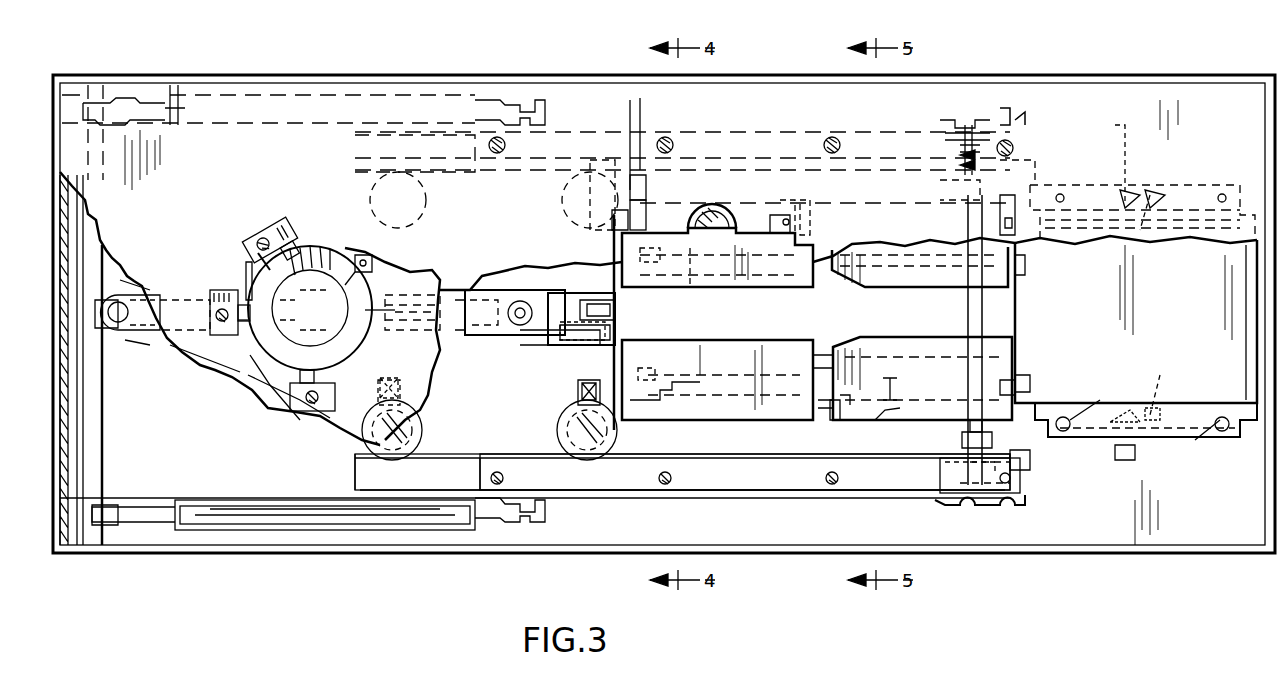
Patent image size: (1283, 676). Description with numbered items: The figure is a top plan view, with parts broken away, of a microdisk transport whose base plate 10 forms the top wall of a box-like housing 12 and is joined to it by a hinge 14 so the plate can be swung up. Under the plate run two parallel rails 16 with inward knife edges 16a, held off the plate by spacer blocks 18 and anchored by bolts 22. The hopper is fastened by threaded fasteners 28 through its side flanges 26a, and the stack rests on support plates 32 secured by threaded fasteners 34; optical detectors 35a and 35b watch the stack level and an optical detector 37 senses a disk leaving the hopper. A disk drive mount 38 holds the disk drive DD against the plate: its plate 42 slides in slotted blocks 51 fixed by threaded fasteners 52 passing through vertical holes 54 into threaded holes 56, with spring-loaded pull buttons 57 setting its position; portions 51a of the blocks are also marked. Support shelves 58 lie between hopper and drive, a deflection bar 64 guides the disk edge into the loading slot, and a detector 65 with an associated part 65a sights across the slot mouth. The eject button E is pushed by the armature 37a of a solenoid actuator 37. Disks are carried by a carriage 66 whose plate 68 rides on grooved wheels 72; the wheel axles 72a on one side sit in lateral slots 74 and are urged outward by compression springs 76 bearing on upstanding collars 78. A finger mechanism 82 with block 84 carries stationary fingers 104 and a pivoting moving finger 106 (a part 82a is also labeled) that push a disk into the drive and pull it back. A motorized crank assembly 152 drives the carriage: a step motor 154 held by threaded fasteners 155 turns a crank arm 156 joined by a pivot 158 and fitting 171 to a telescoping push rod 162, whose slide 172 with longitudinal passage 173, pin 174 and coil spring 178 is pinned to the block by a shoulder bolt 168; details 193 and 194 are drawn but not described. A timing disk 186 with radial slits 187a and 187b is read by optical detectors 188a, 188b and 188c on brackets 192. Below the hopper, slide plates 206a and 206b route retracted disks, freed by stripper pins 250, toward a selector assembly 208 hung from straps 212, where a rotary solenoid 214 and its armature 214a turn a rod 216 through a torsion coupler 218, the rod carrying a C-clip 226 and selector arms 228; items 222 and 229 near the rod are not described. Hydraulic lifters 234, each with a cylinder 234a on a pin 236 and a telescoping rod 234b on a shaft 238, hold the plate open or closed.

The base plate 10 is at (130, 102).
The housing 12 is at (385, 553).
The hinge 14 is at (75, 455).
The rails 16 is at (335, 483).
The knife edges 16a is at (935, 172).
The spacer blocks 18 is at (890, 135).
The bolts 22 is at (665, 137).
The hopper side flanges 26a is at (772, 218).
The threaded fasteners 28 is at (800, 210).
The support plates 32 is at (748, 320).
The threaded fasteners 34 is at (720, 224).
The optical detector 35a is at (640, 200).
The optical detector 35b is at (615, 212).
The solenoid actuator 37 is at (812, 210).
The armature 37a is at (1018, 378).
The disk drive mount 38 is at (1124, 445).
The plate 42 is at (1253, 210).
The slotted blocks 51 is at (1108, 180).
The plate portion 51a is at (1125, 180).
The threaded fasteners 52 is at (1060, 194).
The vertical holes 54 is at (1095, 410).
The threaded holes 56 is at (1218, 194).
The spring-loaded pull buttons 57 is at (1160, 185).
The support shelves 58 is at (910, 337).
The deflection bar 64 is at (1030, 270).
The detector 65 is at (1018, 232).
The coupling arm 65a is at (1020, 190).
The carriage 66 is at (352, 455).
The carriage plate 68 is at (535, 440).
The grooved wheels 72 is at (420, 198).
The wheel axles 72a is at (420, 420).
The lateral slots 74 is at (630, 400).
The spring 76 is at (405, 395).
The upstanding collars 78 is at (410, 380).
The finger mechanism 82 is at (552, 280).
The clamp jaw 82a is at (556, 345).
The block 84 is at (576, 338).
The stationary fingers 104 is at (617, 305).
The moving finger 106 is at (580, 262).
The motorized crank assembly 152 is at (263, 185).
The step motor 154 is at (345, 248).
The threaded fasteners 155 is at (375, 262).
The crank arm 156 is at (148, 340).
The pivot 158 is at (142, 360).
The push rod 162 is at (420, 288).
The shoulder bolt 168 is at (525, 326).
The fitting 171 is at (148, 290).
The slide 172 is at (540, 268).
The longitudinal passage 173 is at (430, 300).
The pin 174 is at (460, 330).
The coil spring 178 is at (388, 322).
The timing disk 186 is at (250, 250).
The radial slit 187a is at (215, 378).
The radial slit 187b is at (262, 400).
The optical detector 188a is at (248, 275).
The optical detector 188b is at (285, 412).
The optical detector 188c is at (258, 230).
The brackets 192 is at (282, 222).
The clamp block 193 is at (208, 300).
The hub 194 is at (330, 290).
The slide plate 206a is at (690, 287).
The slide plate 206b is at (710, 340).
The selector assembly 208 is at (952, 437).
The straps 212 is at (1025, 508).
The rotary solenoid 214 is at (1022, 488).
The armature 214a is at (1022, 465).
The rod 216 is at (984, 310).
The torsion coupler 218 is at (960, 455).
The latch 222 is at (978, 120).
The C-clip 226 is at (955, 200).
The selector arms 228 is at (828, 345).
The detent 229 is at (960, 152).
The hydraulic lifters 234 is at (255, 78).
The cylinder 234a is at (470, 530).
The telescoping rod 234b is at (158, 550).
The pin 236 is at (540, 116).
The shaft 238 is at (104, 478).
The stripper pins 250 is at (698, 262).
The disk drive DD is at (1176, 292).
The eject button E is at (1018, 385).